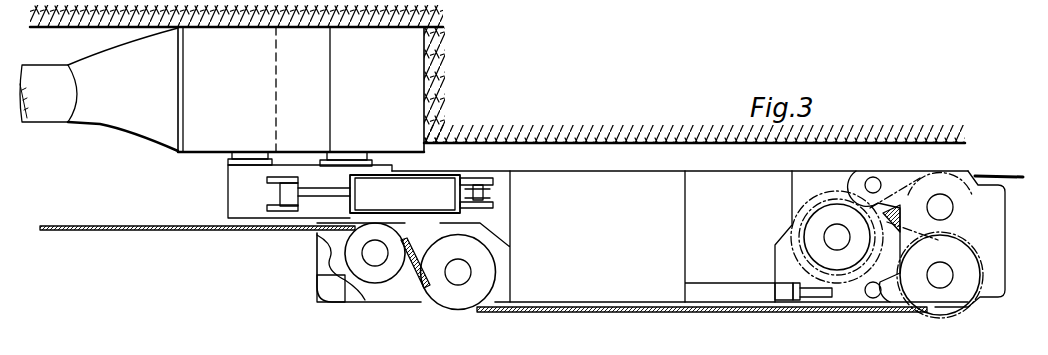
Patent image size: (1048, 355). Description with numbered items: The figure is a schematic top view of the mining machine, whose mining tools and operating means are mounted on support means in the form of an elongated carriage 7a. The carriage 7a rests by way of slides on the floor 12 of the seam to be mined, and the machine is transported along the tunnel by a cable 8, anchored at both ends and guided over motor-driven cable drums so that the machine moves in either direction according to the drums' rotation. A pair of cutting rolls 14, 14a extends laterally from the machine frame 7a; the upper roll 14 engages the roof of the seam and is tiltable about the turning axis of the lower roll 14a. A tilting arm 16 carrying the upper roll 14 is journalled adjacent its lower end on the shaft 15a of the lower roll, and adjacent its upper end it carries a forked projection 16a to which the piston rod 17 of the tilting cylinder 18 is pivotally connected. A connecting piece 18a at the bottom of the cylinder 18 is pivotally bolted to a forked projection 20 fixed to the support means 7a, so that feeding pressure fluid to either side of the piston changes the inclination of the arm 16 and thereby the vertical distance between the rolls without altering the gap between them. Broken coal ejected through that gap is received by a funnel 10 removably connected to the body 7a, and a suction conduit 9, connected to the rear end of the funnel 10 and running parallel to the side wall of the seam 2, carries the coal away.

The seam 2 is at (652, 129).
The elongated carriage 7a is at (670, 244).
The cable 8 is at (157, 232).
The suction conduit 9 is at (53, 80).
The funnel 10 is at (118, 124).
The floor 12 is at (327, 13).
The upper cutting roll 14 is at (197, 143).
The lower cutting roll 14a is at (418, 91).
The shaft of the lower roll 15a is at (357, 151).
The tilting arm 16 is at (240, 192).
The forked projection 16a is at (268, 211).
The piston rod 17 is at (313, 194).
The tilting cylinder 18 is at (438, 185).
The connecting piece 18a is at (495, 193).
The forked projection 20 is at (498, 212).